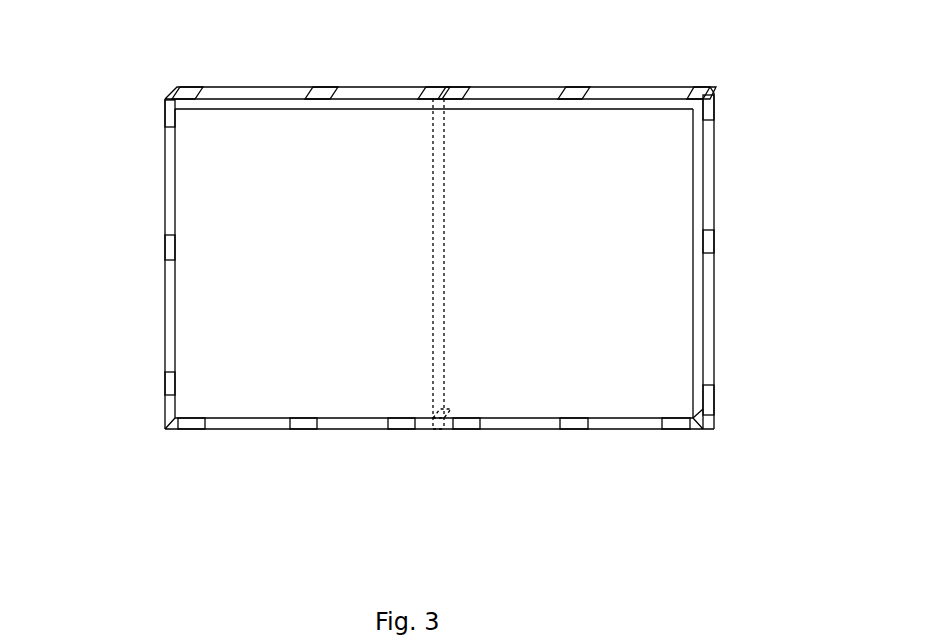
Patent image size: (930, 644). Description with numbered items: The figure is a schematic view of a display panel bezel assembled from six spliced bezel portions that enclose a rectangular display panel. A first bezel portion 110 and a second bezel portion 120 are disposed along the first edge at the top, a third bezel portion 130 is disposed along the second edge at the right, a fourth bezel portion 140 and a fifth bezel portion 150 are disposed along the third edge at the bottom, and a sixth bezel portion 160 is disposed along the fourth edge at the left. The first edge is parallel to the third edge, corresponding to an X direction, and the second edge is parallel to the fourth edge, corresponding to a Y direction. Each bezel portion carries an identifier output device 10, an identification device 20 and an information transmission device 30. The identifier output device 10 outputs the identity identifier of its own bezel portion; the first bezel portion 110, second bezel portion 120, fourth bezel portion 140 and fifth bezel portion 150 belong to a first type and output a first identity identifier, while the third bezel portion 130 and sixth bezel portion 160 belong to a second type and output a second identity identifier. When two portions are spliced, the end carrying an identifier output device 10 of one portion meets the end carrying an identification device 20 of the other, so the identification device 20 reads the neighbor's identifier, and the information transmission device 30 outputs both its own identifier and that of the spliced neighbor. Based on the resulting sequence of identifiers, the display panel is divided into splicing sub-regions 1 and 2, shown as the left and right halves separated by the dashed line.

The splicing sub-region 1 is at (262, 318).
The splicing sub-region 2 is at (600, 316).
The identifier output device 10 is at (187, 86).
The identification device 20 is at (163, 100).
The information transmission device 30 is at (322, 95).
The first bezel portion 110 is at (353, 88).
The second bezel portion 120 is at (616, 96).
The third bezel portion 130 is at (712, 178).
The fourth bezel portion 140 is at (530, 422).
The fifth bezel portion 150 is at (353, 423).
The sixth bezel portion 160 is at (168, 170).